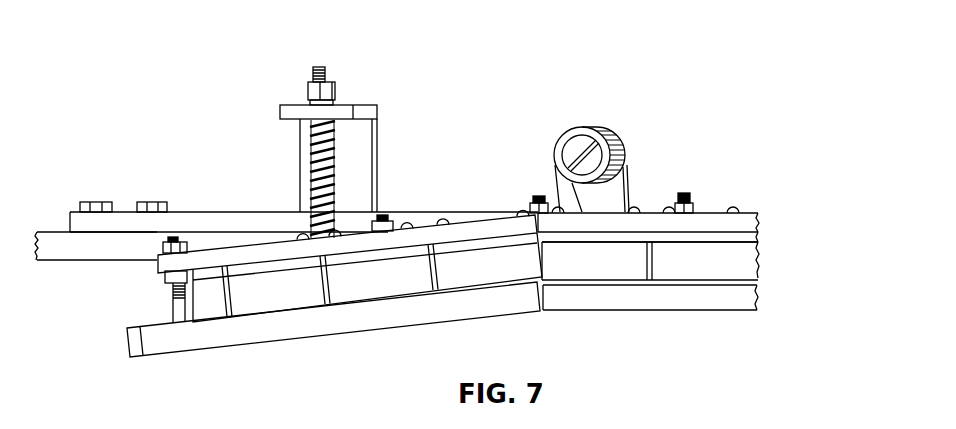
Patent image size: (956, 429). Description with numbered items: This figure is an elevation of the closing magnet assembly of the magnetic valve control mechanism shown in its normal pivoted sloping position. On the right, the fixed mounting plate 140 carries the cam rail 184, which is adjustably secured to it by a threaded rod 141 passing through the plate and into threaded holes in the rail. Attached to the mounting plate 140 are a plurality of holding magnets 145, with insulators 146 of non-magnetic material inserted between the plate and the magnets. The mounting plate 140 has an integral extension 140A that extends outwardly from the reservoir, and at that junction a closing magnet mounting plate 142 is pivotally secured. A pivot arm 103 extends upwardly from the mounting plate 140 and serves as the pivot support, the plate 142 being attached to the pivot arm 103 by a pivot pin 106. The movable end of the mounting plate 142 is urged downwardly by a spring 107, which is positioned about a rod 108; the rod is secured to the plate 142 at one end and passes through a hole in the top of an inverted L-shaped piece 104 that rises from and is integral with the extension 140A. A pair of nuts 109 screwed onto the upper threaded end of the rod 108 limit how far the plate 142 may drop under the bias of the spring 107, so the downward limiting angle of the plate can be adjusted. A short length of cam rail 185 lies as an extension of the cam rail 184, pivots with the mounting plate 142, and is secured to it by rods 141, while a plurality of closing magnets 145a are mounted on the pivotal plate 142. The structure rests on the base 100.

The base plate 100 is at (83, 250).
The integral extension 140A is at (210, 215).
The closing magnet mounting plate 142 is at (255, 252).
The threaded rod 141 is at (177, 303).
The cam rail 185 is at (257, 335).
The closing magnets 145a is at (384, 287).
The inverted L-shaped piece 104 is at (378, 147).
The spring 107 is at (313, 147).
The rod 108 is at (322, 68).
The nuts 109 is at (337, 95).
The pivot pin 106 is at (572, 145).
The pivot arm 103 is at (628, 177).
The mounting plate 140 is at (695, 220).
The insulators 146 is at (755, 237).
The holding magnets 145 is at (718, 270).
The cam rail 184 is at (640, 303).